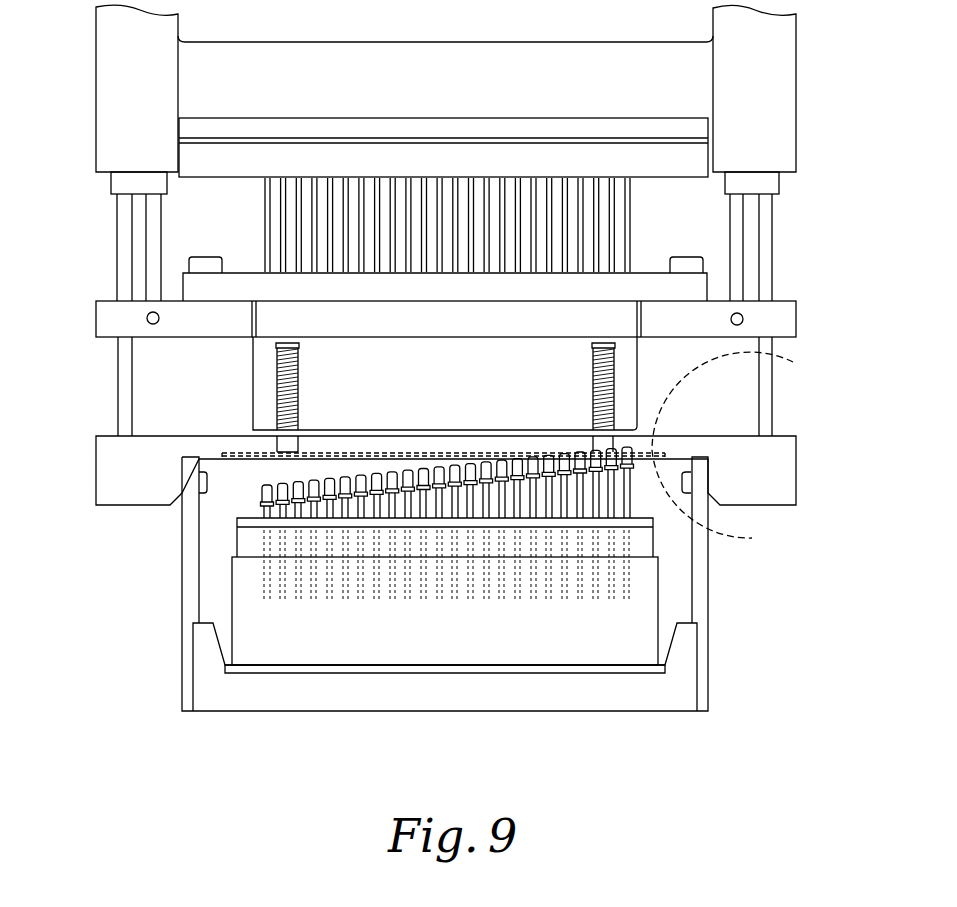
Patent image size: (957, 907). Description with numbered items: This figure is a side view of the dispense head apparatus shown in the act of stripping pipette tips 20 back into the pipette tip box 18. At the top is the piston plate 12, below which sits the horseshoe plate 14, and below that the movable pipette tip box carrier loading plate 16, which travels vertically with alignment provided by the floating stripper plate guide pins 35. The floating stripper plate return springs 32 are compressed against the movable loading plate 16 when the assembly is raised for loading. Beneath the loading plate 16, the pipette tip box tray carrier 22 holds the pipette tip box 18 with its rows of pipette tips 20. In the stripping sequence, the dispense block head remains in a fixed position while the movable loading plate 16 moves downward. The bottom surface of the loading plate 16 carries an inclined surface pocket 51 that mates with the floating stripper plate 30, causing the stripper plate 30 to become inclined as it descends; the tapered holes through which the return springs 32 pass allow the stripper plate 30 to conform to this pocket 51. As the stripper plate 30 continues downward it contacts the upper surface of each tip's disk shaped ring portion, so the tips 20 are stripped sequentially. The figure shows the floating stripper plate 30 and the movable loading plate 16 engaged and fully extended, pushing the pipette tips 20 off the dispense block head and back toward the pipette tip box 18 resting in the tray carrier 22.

The piston plate 12 is at (96, 88).
The horseshoe plate 14 is at (96, 320).
The movable pipette tip box carrier loading plate 16 is at (96, 470).
The pipette tip box 18 is at (232, 568).
The pipette tips 20 is at (262, 494).
The pipette tip box tray carrier 22 is at (182, 658).
The floating stripper plate 30 is at (500, 501).
The floating stripper plate return springs 32 is at (276, 380).
The floating stripper plate guide pins 35 is at (272, 444).
The inclined surface pocket 51 is at (793, 362).